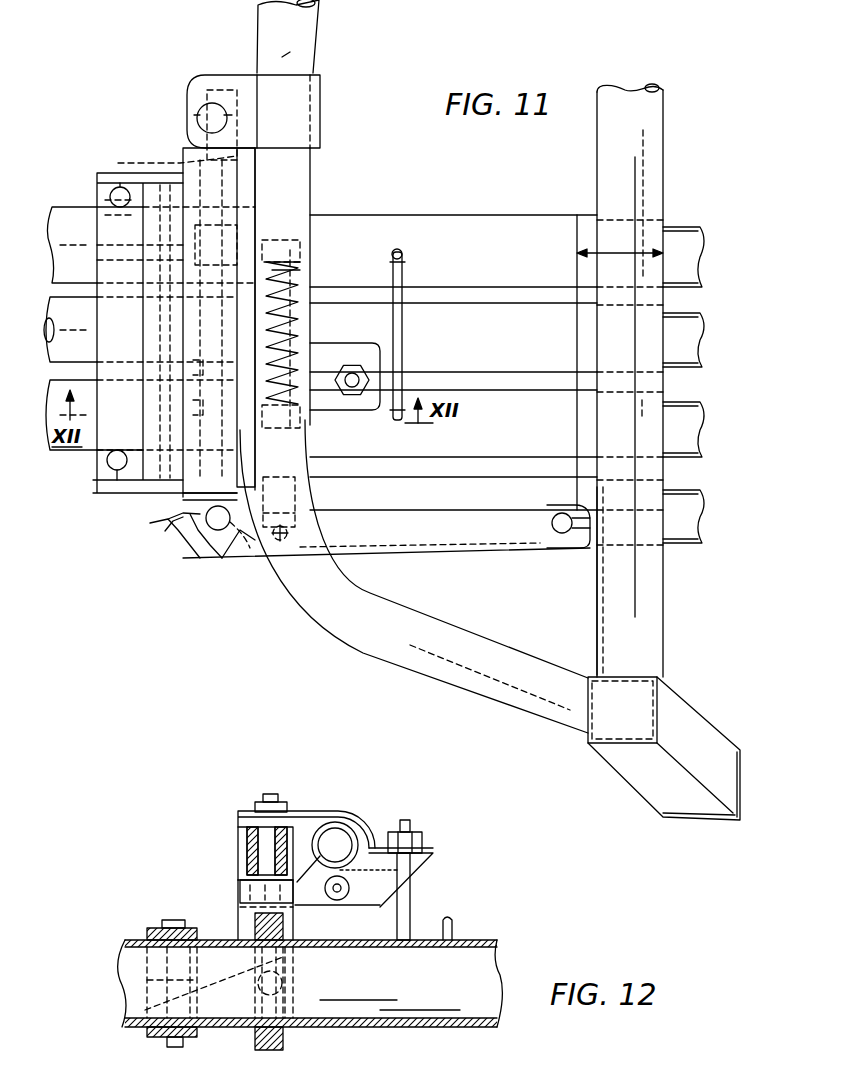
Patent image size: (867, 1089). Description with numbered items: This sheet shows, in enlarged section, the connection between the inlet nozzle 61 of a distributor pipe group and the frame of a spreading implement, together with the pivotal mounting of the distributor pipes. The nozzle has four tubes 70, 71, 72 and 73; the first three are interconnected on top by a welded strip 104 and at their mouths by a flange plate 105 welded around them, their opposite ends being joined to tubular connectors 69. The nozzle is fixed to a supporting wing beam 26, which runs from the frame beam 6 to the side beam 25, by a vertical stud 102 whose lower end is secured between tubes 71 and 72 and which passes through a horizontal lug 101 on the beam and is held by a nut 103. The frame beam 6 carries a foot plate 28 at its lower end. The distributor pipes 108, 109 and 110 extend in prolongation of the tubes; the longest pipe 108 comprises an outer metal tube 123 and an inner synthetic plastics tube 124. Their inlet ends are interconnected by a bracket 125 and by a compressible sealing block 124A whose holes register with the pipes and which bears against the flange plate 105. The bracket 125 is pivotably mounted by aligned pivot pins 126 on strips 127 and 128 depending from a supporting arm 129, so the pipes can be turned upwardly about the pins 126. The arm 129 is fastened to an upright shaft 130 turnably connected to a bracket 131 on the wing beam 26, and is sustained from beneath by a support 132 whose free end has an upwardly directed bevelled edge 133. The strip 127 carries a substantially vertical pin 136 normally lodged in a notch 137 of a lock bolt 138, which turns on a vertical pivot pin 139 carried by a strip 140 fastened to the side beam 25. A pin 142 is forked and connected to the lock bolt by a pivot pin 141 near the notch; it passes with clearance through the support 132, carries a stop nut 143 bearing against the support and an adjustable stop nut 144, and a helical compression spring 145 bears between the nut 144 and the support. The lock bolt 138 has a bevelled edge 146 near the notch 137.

In FIG. 11, the frame beam 6 is at (682, 702).
In FIG. 11, the side beam 25 is at (652, 172).
In FIG. 11, the supporting wing beam 26 is at (300, 50).
In FIG. 12, the supporting wing beam 26 is at (357, 820).
In FIG. 11, the foot plate 28 is at (697, 820).
In FIG. 11, the inlet nozzle 61 is at (688, 546).
In FIG. 11, the tubular connector 69 is at (620, 243).
In FIG. 11, the tube 70 is at (468, 200).
In FIG. 11, the tube 71 is at (483, 310).
In FIG. 11, the tube 72 is at (508, 397).
In FIG. 12, the tube 72 is at (470, 970).
In FIG. 11, the tube 73 is at (545, 441).
In FIG. 12, the horizontal lug 101 is at (430, 846).
In FIG. 11, the vertical stud 102 is at (395, 422).
In FIG. 12, the vertical stud 102 is at (412, 898).
In FIG. 11, the nut 103 is at (348, 372).
In FIG. 12, the nut 103 is at (422, 836).
In FIG. 11, the strip 104 is at (404, 258).
In FIG. 12, the strip 104 is at (453, 927).
In FIG. 11, the flange plate 105 is at (248, 199).
In FIG. 12, the flange plate 105 is at (288, 1043).
In FIG. 11, the distributor pipe 108 is at (76, 207).
In FIG. 11, the distributor pipe 109 is at (72, 330).
In FIG. 11, the distributor pipe 110 is at (152, 397).
In FIG. 12, the distributor pipe 110 is at (128, 938).
In FIG. 11, the outer metal tube 123 is at (77, 259).
In FIG. 11, the inner synthetic plastics tube 124 is at (55, 229).
In FIG. 11, the sealing block 124A is at (162, 249).
In FIG. 12, the sealing block 124A is at (256, 1046).
In FIG. 11, the bracket 125 is at (150, 493).
In FIG. 12, the bracket 125 is at (150, 1032).
In FIG. 11, the pivot pin 126 is at (205, 158).
In FIG. 12, the pivot pin 126 is at (290, 975).
In FIG. 11, the strip 127 is at (183, 492).
In FIG. 11, the strip 128 is at (157, 149).
In FIG. 11, the supporting arm 129 is at (237, 237).
In FIG. 12, the supporting arm 129 is at (238, 835).
In FIG. 11, the upright shaft 130 is at (197, 123).
In FIG. 12, the upright shaft 130 is at (282, 780).
In FIG. 11, the bracket 131 is at (248, 58).
In FIG. 12, the bracket 131 is at (333, 813).
In FIG. 11, the support 132 is at (350, 400).
In FIG. 12, the support 132 is at (243, 886).
In FIG. 12, the bevelled edge 133 is at (240, 878).
In FIG. 11, the pin 136 is at (183, 548).
In FIG. 11, the notch 137 is at (213, 560).
In FIG. 11, the lock bolt 138 is at (458, 533).
In FIG. 11, the pivot pin 139 is at (563, 535).
In FIG. 11, the strip 140 is at (597, 523).
In FIG. 11, the pivot pin 141 is at (272, 565).
In FIG. 11, the pin 142 is at (312, 241).
In FIG. 12, the pin 142 is at (362, 870).
In FIG. 12, the stop nut 143 is at (330, 906).
In FIG. 11, the adjustable stop nut 144 is at (314, 263).
In FIG. 11, the helical compression spring 145 is at (310, 320).
In FIG. 11, the bevelled edge 146 is at (167, 528).